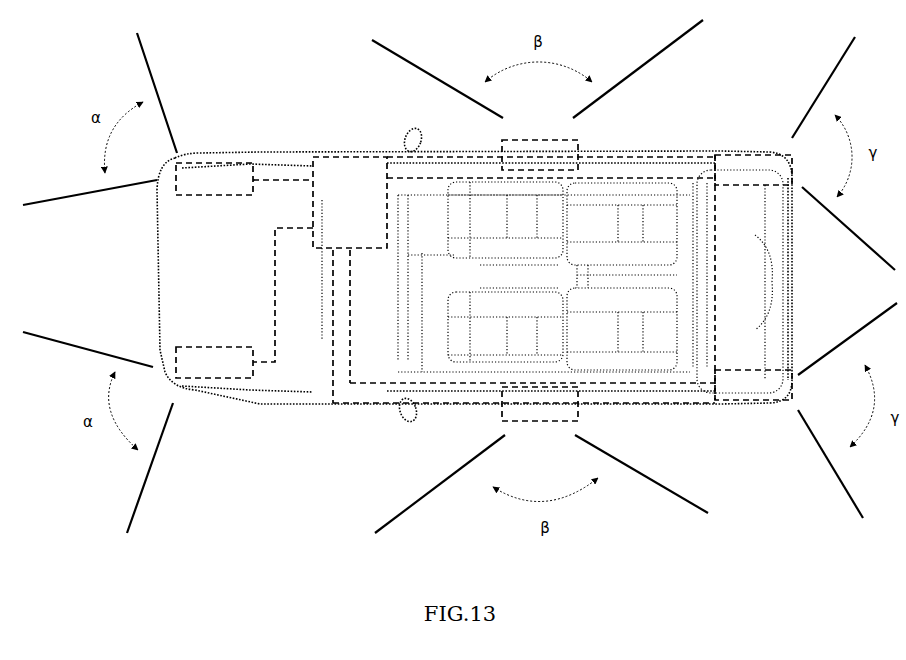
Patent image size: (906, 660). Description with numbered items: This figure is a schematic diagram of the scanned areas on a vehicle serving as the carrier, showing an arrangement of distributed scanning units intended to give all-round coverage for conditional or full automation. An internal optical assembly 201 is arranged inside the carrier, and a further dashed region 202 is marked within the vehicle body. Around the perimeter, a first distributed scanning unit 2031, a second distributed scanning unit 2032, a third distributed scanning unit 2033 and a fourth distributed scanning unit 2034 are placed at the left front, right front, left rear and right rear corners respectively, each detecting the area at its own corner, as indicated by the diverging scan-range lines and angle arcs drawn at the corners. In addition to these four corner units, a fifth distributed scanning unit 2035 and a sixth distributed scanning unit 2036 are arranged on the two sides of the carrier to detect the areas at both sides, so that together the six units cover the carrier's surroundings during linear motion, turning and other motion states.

The internal optical assembly 201 is at (343, 157).
The cabin sensing region 202 is at (643, 157).
The first distributed scanning unit 2031 is at (213, 163).
The second distributed scanning unit 2032 is at (207, 388).
The third distributed scanning unit 2033 is at (765, 155).
The fourth distributed scanning unit 2034 is at (773, 402).
The fifth distributed scanning unit 2035 is at (497, 143).
The sixth distributed scanning unit 2036 is at (587, 407).